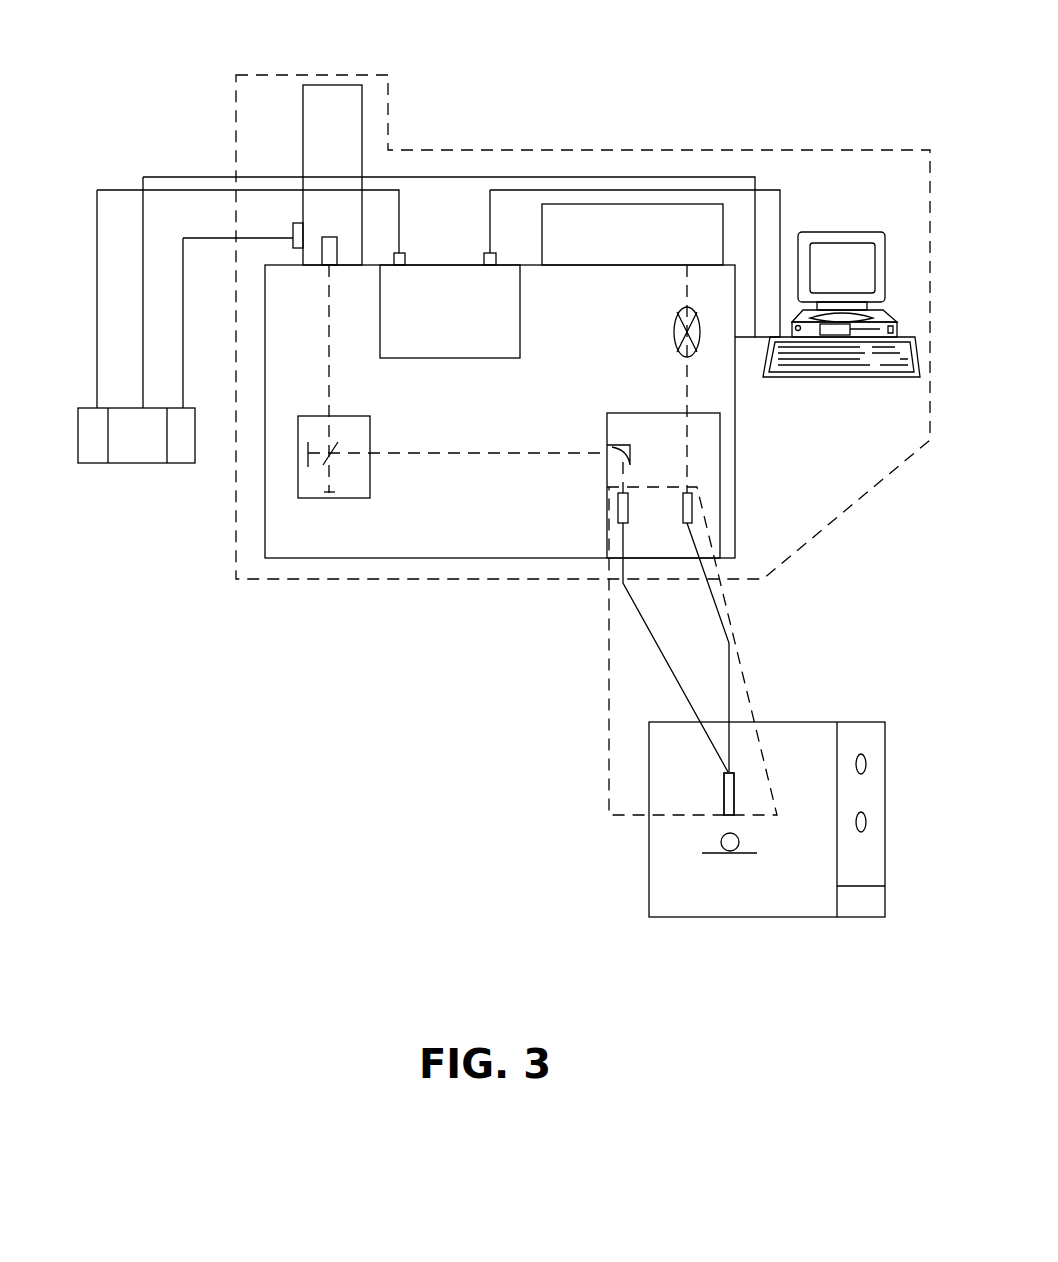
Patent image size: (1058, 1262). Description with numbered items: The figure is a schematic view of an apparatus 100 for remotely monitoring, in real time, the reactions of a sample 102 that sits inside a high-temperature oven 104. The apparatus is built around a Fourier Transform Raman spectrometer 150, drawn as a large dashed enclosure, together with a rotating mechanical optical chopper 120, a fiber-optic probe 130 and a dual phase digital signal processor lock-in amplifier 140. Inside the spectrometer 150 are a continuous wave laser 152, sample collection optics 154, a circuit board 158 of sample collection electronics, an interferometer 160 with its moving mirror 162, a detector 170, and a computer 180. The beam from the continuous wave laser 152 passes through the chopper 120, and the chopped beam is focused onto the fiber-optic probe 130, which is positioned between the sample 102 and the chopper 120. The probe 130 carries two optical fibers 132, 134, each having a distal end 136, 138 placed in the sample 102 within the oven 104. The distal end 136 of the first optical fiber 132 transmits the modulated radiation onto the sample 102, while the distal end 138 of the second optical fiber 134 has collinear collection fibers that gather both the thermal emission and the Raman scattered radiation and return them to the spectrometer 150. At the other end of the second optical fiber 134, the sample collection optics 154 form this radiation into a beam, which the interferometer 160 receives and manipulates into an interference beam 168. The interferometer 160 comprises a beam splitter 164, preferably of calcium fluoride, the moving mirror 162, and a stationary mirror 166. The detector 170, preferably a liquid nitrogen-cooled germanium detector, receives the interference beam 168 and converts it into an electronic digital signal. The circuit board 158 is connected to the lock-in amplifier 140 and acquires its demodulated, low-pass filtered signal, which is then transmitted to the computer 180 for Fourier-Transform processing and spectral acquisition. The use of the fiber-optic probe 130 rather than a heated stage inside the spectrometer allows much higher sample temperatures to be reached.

The apparatus 100 is at (343, 813).
The sample 102 is at (720, 843).
The high-temperature oven 104 is at (649, 888).
The rotating mechanical optical chopper 120 is at (693, 310).
The fiber-optic probe 130 is at (609, 700).
The first optical fiber 132 is at (729, 687).
The second optical fiber 134 is at (643, 620).
The distal end of the first optical fiber 136 is at (734, 788).
The distal end of the second optical fiber 138 is at (832, 753).
The lock-in amplifier 140 is at (138, 463).
The Fourier Transform Raman spectrometer 150 is at (820, 533).
The continuous wave laser 152 is at (625, 204).
The sample collection optics 154 is at (630, 446).
The circuit board 158 is at (437, 265).
The interferometer 160 is at (340, 497).
The moving mirror 162 is at (308, 463).
The beam splitter 164 is at (338, 445).
The stationary mirror 166 is at (327, 493).
The interference beam 168 is at (329, 353).
The detector 170 is at (335, 83).
The computer 180 is at (837, 232).